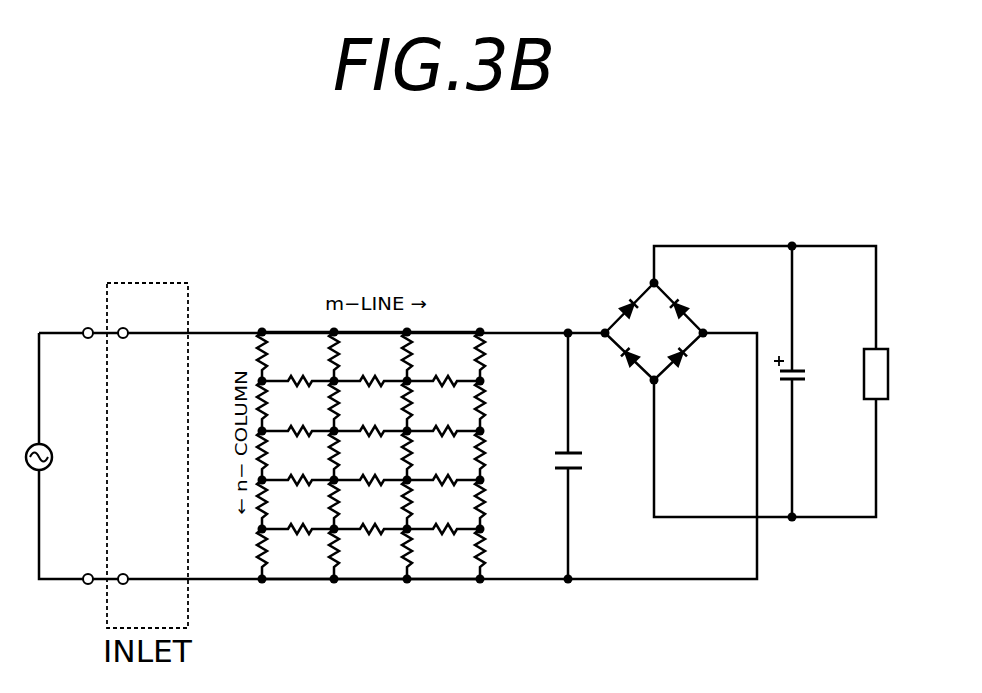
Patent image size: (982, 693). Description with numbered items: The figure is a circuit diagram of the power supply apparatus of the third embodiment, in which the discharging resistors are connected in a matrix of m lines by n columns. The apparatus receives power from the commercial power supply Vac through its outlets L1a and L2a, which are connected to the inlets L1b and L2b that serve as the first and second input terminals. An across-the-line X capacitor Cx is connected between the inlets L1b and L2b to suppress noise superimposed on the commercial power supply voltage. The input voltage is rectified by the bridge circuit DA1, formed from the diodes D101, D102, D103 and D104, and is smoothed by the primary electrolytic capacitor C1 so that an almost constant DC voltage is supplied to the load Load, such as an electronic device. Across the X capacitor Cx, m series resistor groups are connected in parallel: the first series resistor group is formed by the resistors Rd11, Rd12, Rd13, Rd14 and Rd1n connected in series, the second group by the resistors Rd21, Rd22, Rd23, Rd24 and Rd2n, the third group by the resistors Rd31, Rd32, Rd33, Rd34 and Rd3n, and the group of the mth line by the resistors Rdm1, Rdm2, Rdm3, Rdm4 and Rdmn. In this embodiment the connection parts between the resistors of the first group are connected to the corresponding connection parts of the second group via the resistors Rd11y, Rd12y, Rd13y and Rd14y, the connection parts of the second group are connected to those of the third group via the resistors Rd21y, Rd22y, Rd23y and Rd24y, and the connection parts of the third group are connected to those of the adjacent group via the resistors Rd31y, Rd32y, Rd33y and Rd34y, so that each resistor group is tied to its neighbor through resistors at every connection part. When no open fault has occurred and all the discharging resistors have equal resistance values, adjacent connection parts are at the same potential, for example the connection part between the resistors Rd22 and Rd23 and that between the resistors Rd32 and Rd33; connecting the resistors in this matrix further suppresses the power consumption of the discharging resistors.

The commercial power supply Vac is at (58, 441).
The outlet L1a is at (75, 317).
The inlet (first input terminal) L1b is at (148, 317).
The outlet L2a is at (75, 594).
The inlet (second input terminal) L2b is at (149, 594).
The resistor Rd11 is at (287, 356).
The resistor Rd21 is at (359, 356).
The resistor Rd31 is at (432, 356).
The resistor Rdm1 is at (508, 356).
The resistor Rd12 is at (287, 406).
The resistor Rd22 is at (359, 406).
The resistor Rd32 is at (432, 406).
The resistor Rdm2 is at (508, 406).
The resistor Rd13 is at (287, 455).
The resistor Rd23 is at (359, 455).
The resistor Rd33 is at (432, 455).
The resistor Rdm3 is at (508, 455).
The resistor Rd14 is at (287, 504).
The resistor Rd24 is at (359, 504).
The resistor Rd34 is at (432, 504).
The resistor Rdm4 is at (508, 504).
The resistor Rd1n is at (287, 554).
The resistor Rd2n is at (360, 554).
The resistor Rd3n is at (433, 554).
The resistor Rdmn is at (509, 554).
The resistor Rd11y is at (298, 373).
The resistor Rd21y is at (370, 373).
The resistor Rd31y is at (443, 373).
The resistor Rd12y is at (298, 423).
The resistor Rd22y is at (370, 423).
The resistor Rd32y is at (443, 423).
The resistor Rd13y is at (298, 472).
The resistor Rd23y is at (370, 472).
The resistor Rd33y is at (443, 472).
The resistor Rd14y is at (298, 521).
The resistor Rd24y is at (370, 521).
The resistor Rd34y is at (443, 521).
The X capacitor Cx is at (592, 461).
The bridge circuit DA1 is at (655, 337).
The diode D101 is at (599, 296).
The diode D102 is at (707, 296).
The diode D103 is at (709, 373).
The diode D104 is at (607, 373).
The primary electrolytic capacitor C1 is at (802, 386).
The load Load is at (845, 358).